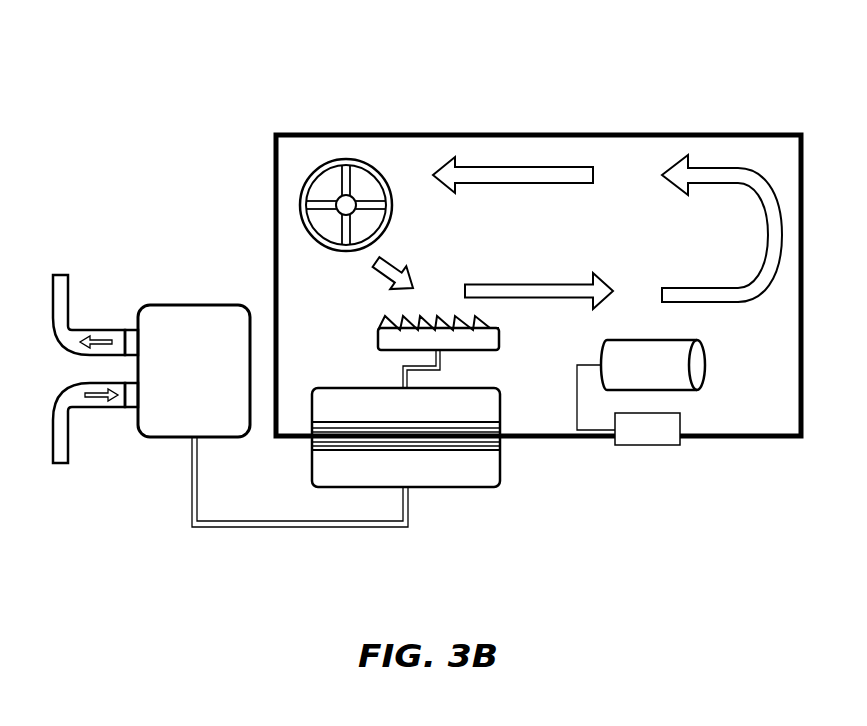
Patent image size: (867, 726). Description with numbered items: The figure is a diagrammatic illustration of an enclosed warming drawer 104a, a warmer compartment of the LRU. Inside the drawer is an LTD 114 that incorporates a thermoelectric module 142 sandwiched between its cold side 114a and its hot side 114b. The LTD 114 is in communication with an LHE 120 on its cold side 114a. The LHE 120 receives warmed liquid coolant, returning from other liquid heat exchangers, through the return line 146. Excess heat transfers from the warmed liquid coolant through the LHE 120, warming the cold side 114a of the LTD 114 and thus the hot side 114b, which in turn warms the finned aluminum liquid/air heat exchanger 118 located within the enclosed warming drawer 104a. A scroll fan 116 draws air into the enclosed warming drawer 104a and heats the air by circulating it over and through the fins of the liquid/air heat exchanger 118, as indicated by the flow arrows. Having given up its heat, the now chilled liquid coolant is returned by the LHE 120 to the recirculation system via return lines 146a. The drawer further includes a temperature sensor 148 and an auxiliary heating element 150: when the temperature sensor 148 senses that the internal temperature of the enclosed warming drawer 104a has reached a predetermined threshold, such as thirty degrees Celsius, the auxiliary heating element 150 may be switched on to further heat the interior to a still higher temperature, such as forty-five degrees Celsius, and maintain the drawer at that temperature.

The enclosed warming drawer 104a is at (72, 46).
The scroll fan 116 is at (300, 204).
The finned aluminum liquid/air heat exchanger 118 is at (377, 338).
The LTD 114 is at (451, 467).
The cold side 114a is at (365, 478).
The hot side 114b is at (365, 416).
The thermoelectric module 142 is at (483, 442).
The auxiliary heating element 150 is at (665, 378).
The temperature sensor 148 is at (663, 440).
The LHE 120 is at (213, 400).
The return lines 146a is at (68, 310).
The return line 146 is at (67, 430).